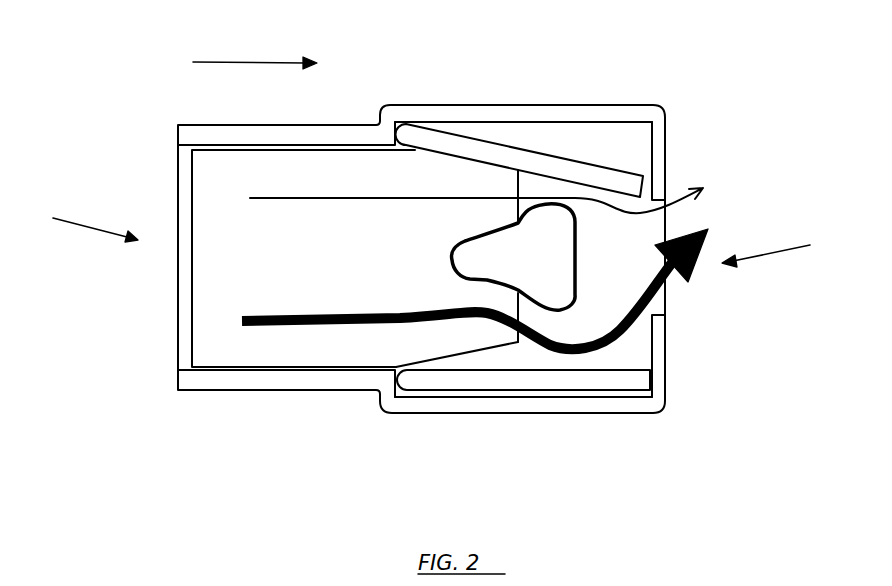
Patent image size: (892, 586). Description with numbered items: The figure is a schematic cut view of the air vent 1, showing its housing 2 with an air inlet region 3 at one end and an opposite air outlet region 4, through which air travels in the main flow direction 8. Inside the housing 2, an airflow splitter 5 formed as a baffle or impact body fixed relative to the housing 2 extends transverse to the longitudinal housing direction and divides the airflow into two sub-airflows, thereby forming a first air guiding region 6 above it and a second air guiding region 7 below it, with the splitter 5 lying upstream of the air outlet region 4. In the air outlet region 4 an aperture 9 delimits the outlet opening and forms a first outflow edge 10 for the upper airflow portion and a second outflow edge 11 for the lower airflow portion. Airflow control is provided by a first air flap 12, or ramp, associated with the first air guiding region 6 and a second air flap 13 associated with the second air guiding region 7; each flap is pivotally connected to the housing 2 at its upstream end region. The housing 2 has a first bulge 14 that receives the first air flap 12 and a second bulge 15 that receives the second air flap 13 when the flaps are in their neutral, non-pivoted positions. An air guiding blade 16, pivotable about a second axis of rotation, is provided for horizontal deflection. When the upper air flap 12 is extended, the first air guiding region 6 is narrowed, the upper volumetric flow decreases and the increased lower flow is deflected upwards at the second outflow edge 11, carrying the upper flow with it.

The air vent 1 is at (172, 41).
The housing 2 is at (232, 138).
The air inlet region 3 is at (87, 221).
The air outlet region 4 is at (776, 245).
The airflow splitter 5 is at (537, 257).
The first air guiding region 6 is at (565, 190).
The second air guiding region 7 is at (518, 348).
The main flow direction 8 is at (255, 52).
The aperture 9 is at (660, 140).
The first outflow edge 10 is at (657, 190).
The second outflow edge 11 is at (657, 315).
The first air flap 12 is at (523, 163).
The second air flap 13 is at (600, 380).
The first bulge 14 is at (626, 118).
The second bulge 15 is at (553, 395).
The air guiding blade 16 is at (228, 227).